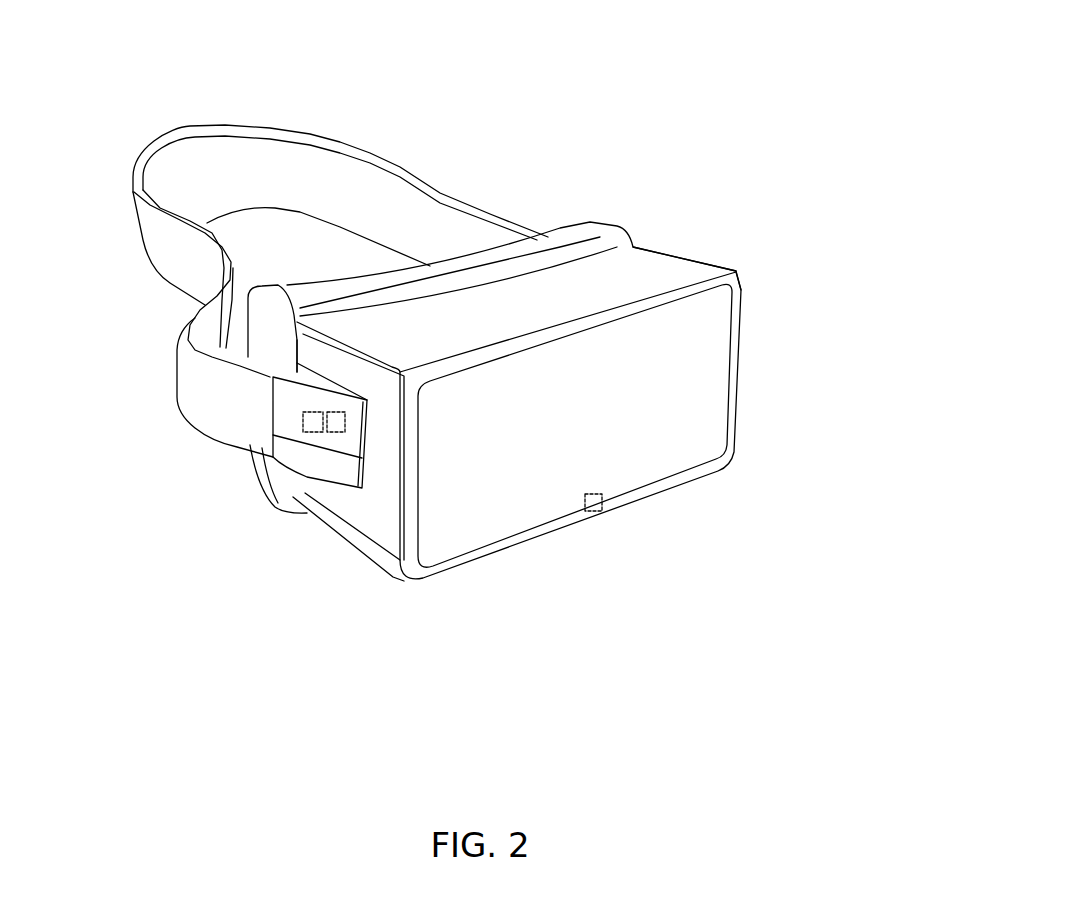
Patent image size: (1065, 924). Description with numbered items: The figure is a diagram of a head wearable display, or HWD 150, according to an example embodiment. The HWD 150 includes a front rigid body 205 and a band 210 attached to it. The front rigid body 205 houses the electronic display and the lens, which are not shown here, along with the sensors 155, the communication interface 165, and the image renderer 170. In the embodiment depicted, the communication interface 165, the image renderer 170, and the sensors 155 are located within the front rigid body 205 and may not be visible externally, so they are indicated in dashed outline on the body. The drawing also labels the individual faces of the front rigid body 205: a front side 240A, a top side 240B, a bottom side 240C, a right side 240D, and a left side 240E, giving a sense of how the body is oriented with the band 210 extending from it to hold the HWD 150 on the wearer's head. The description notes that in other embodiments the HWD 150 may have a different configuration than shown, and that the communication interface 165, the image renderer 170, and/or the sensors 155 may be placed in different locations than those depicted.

The HWD 150 is at (70, 70).
The band 210 is at (443, 190).
The front rigid body 205 is at (736, 272).
The front side 240A is at (660, 462).
The top side 240B is at (360, 321).
The bottom side 240C is at (328, 556).
The right side 240D is at (373, 522).
The left side 240E is at (712, 250).
The communication interface 165 is at (288, 426).
The image renderer 170 is at (318, 443).
The sensors 155 is at (596, 525).